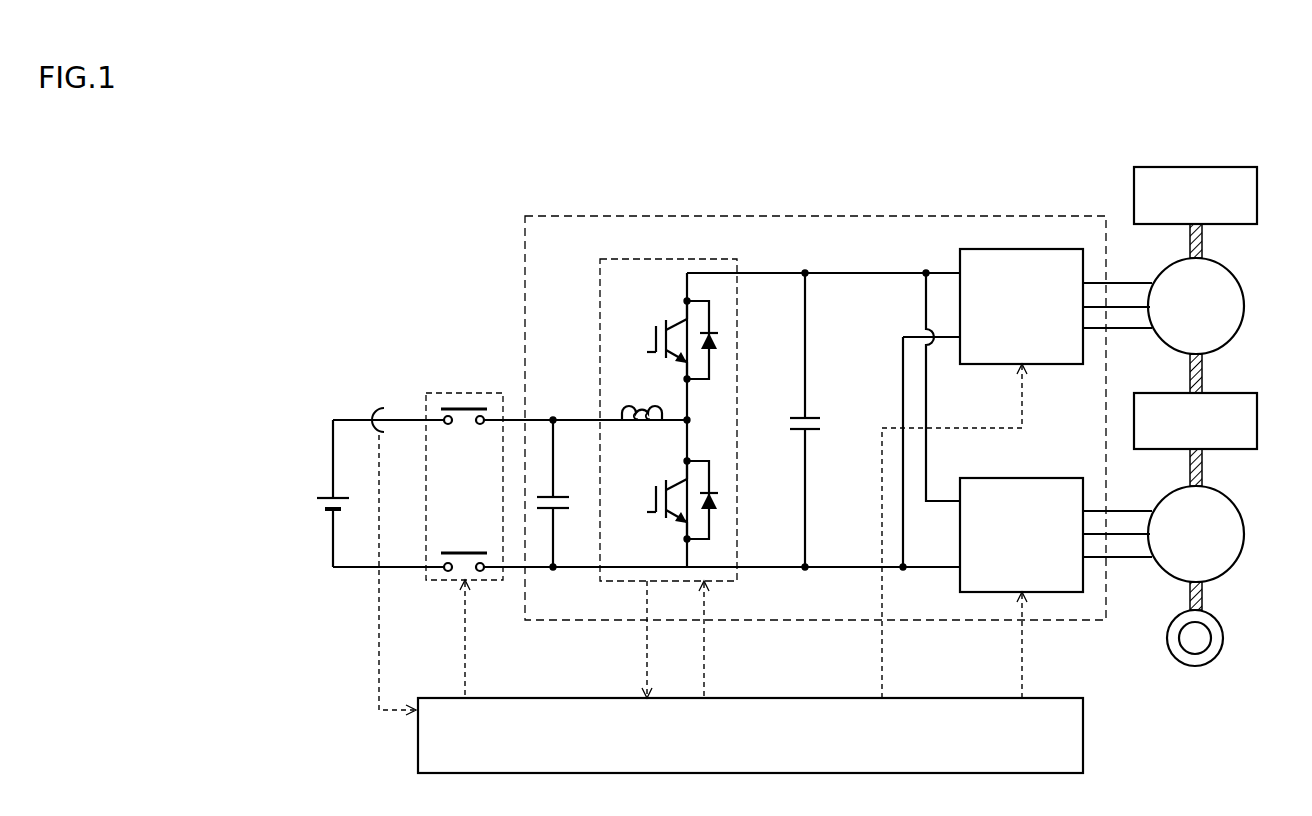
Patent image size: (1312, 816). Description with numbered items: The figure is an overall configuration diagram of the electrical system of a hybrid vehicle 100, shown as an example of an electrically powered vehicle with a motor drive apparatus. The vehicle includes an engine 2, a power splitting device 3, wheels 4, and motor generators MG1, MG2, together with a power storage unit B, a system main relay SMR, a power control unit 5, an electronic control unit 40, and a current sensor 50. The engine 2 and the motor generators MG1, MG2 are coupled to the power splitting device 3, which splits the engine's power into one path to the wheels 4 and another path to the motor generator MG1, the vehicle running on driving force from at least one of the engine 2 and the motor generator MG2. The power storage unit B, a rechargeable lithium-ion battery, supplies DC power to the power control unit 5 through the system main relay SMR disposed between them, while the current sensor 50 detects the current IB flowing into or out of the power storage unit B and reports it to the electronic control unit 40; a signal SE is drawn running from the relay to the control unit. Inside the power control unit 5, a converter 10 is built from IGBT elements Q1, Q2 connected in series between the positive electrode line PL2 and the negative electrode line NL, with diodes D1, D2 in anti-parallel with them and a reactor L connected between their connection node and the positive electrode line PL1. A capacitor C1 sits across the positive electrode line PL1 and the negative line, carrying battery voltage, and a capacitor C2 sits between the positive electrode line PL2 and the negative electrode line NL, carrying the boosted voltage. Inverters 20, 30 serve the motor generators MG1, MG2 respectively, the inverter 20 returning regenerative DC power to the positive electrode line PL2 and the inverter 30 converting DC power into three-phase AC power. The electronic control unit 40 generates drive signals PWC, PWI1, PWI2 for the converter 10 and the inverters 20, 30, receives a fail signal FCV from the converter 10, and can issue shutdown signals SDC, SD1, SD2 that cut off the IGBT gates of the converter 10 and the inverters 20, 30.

The hybrid vehicle 100 is at (410, 194).
The engine 2 is at (1257, 197).
The power splitting device 3 is at (1257, 418).
The wheels 4 is at (1223, 638).
The power control unit 5 is at (1013, 216).
The converter 10 is at (670, 259).
The inverter 20 is at (1040, 249).
The inverter 30 is at (1040, 478).
The electronic control unit 40 is at (1083, 735).
The current sensor 50 is at (381, 407).
The power storage unit B is at (343, 496).
The system main relay SMR is at (468, 392).
The positive electrode line PL1 is at (572, 416).
The positive electrode line PL2 is at (781, 272).
The negative electrode line NL is at (780, 569).
The capacitor C1 is at (567, 496).
The capacitor C2 is at (812, 417).
The reactor L is at (640, 411).
The IGBT element Q1 is at (660, 318).
The IGBT element Q2 is at (660, 478).
The diode D1 is at (718, 341).
The diode D2 is at (718, 501).
The motor generator MG1 is at (1236, 281).
The motor generator MG2 is at (1236, 509).
The current IB is at (396, 663).
The relay control signal SE is at (484, 663).
The fail signal FCV is at (613, 663).
The signal PWC is at (734, 646).
The shutdown signal SDC is at (732, 676).
The signal PWI1 is at (916, 650).
The shutdown signal SD1 is at (911, 676).
The signal PWI2 is at (1054, 650).
The shutdown signal SD2 is at (1049, 676).